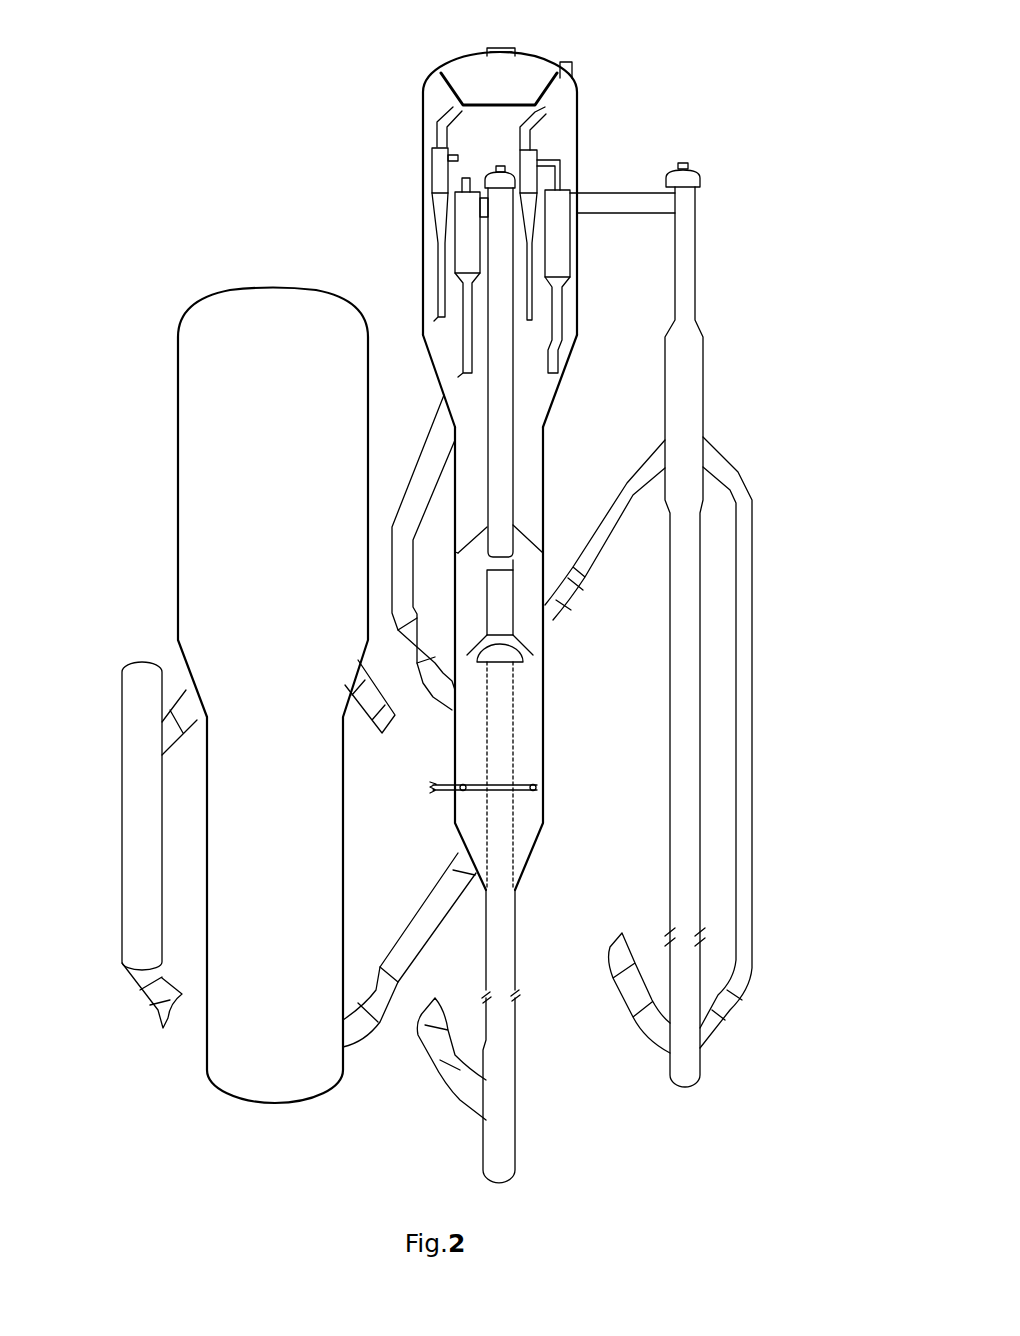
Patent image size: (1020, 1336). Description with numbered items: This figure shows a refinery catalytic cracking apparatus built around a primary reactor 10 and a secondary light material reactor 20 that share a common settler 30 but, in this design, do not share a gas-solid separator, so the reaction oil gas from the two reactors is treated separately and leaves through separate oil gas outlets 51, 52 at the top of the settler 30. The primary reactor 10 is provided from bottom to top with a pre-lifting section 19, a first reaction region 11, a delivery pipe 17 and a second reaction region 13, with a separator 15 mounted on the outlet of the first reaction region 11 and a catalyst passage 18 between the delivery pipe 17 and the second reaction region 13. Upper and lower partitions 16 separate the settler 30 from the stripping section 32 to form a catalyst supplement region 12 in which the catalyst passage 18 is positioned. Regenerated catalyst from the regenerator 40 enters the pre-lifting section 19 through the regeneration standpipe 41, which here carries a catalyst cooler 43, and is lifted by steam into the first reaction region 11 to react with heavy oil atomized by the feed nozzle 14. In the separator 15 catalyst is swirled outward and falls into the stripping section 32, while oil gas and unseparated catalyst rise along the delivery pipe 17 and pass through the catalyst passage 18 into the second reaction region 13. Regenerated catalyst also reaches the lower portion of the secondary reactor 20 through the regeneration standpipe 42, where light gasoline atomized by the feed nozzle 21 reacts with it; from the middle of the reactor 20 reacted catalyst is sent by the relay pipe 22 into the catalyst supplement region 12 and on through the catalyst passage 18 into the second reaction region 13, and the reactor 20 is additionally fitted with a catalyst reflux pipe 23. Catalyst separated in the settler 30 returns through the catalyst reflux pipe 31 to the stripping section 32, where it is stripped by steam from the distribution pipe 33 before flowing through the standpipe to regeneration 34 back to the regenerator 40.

The primary reactor 10 is at (541, 1024).
The first reaction region 11 is at (507, 940).
The catalyst supplement region 12 is at (527, 568).
The second reaction region 13 is at (505, 377).
The feed nozzle 14 is at (512, 988).
The separator 15 is at (527, 660).
The partition 16 is at (513, 525).
The delivery pipe 17 is at (505, 608).
The catalyst passage 18 is at (490, 560).
The pre-lifting section 19 is at (507, 1117).
The secondary light material reactor 20 is at (661, 625).
The feed nozzle 21 is at (671, 920).
The relay pipe 22 is at (587, 562).
The catalyst reflux pipe 23 is at (736, 746).
The settler 30 is at (518, 278).
The catalyst reflux pipe 31 is at (442, 482).
The stripping section 32 is at (515, 650).
The distribution pipe 33 is at (528, 788).
The standpipe to regeneration 34 is at (418, 930).
The regenerator 40 is at (205, 498).
The regeneration standpipe 41 is at (162, 1002).
The regeneration standpipe 42 is at (368, 725).
The catalyst cooler 43 is at (137, 711).
The oil gas outlet 51 is at (512, 50).
The oil gas outlet 52 is at (571, 70).